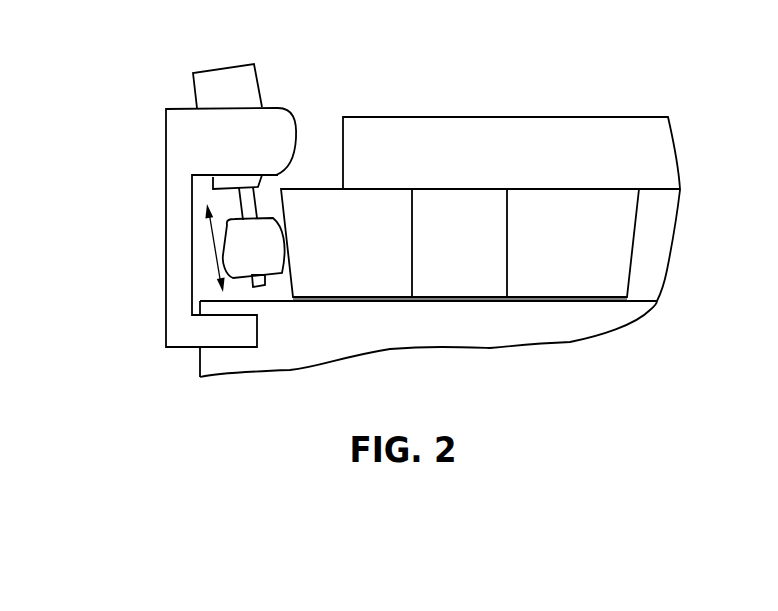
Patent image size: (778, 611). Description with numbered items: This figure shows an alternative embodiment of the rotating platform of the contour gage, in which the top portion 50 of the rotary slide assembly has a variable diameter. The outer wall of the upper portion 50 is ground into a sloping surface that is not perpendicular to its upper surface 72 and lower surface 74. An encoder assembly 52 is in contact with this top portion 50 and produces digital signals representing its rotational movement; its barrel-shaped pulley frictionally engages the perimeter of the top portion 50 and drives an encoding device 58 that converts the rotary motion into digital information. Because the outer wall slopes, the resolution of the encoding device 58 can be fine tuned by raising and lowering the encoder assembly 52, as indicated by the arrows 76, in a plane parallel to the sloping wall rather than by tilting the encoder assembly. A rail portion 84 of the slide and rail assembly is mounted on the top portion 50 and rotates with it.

The top portion of the rotary slide assembly 50 is at (358, 275).
The encoder assembly 52 is at (158, 90).
The encoding device 58 is at (230, 67).
The upper surface 72 is at (328, 188).
The lower surface 74 is at (262, 205).
The arrows 76 is at (213, 247).
The rail portion 84 is at (634, 125).